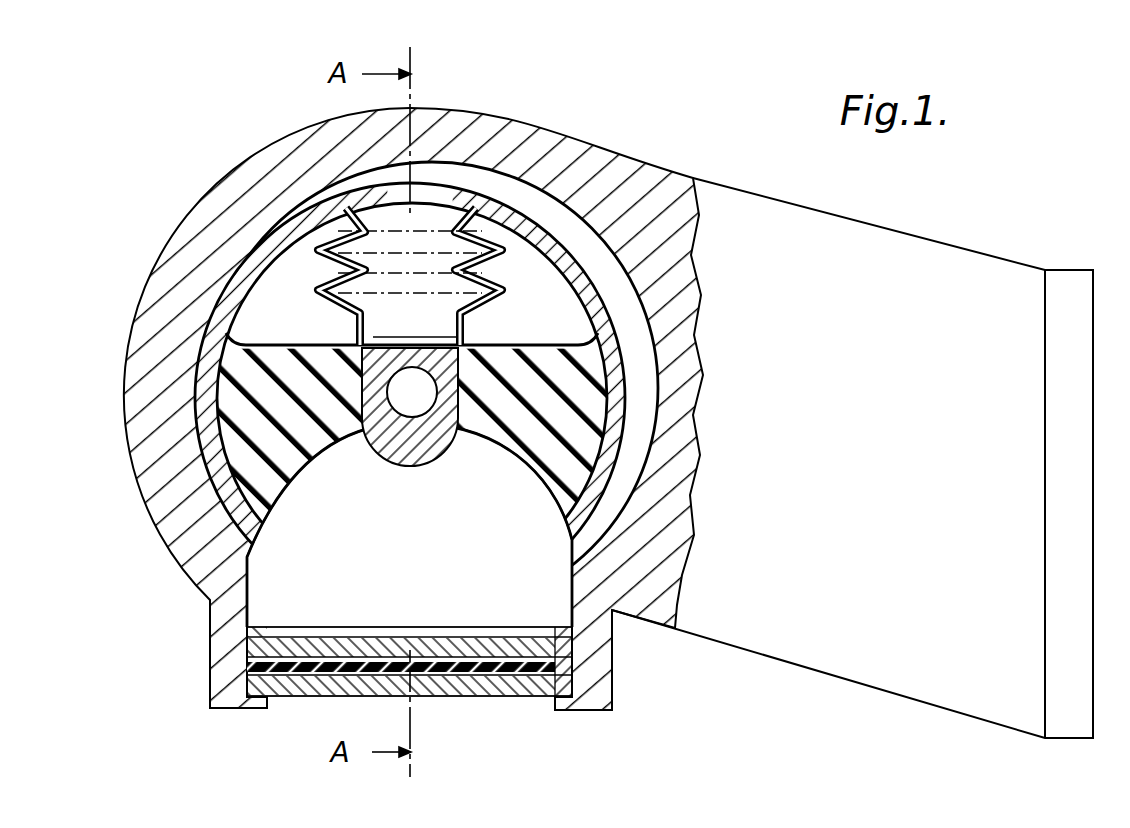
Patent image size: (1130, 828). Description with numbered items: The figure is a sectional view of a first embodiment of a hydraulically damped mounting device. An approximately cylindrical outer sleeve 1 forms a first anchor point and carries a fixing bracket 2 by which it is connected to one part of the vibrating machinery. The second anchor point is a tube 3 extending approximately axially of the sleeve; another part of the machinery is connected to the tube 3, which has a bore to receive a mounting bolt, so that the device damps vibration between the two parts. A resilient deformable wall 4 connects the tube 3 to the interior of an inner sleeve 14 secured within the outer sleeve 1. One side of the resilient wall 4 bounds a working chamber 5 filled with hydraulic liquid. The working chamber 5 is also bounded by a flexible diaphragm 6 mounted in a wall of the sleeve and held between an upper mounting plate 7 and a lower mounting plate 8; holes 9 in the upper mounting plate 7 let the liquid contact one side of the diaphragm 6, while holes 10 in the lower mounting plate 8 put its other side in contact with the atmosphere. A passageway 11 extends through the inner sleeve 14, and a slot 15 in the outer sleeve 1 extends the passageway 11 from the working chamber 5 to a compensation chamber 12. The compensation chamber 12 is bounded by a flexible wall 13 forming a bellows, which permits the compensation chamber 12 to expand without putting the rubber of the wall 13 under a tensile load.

The outer sleeve 1 is at (258, 172).
The fixing bracket 2 is at (868, 240).
The tube 3 is at (428, 466).
The resilient deformable wall 4 is at (262, 470).
The working chamber 5 is at (397, 581).
The flexible diaphragm 6 is at (485, 668).
The upper mounting plate 7 is at (563, 648).
The lower mounting plate 8 is at (626, 696).
The holes 9 is at (503, 642).
The holes 10 is at (512, 688).
The passageway 11 is at (543, 212).
The compensation chamber 12 is at (420, 276).
The flexible wall 13 is at (330, 259).
The inner sleeve 14 is at (233, 285).
The slot 15 is at (586, 226).